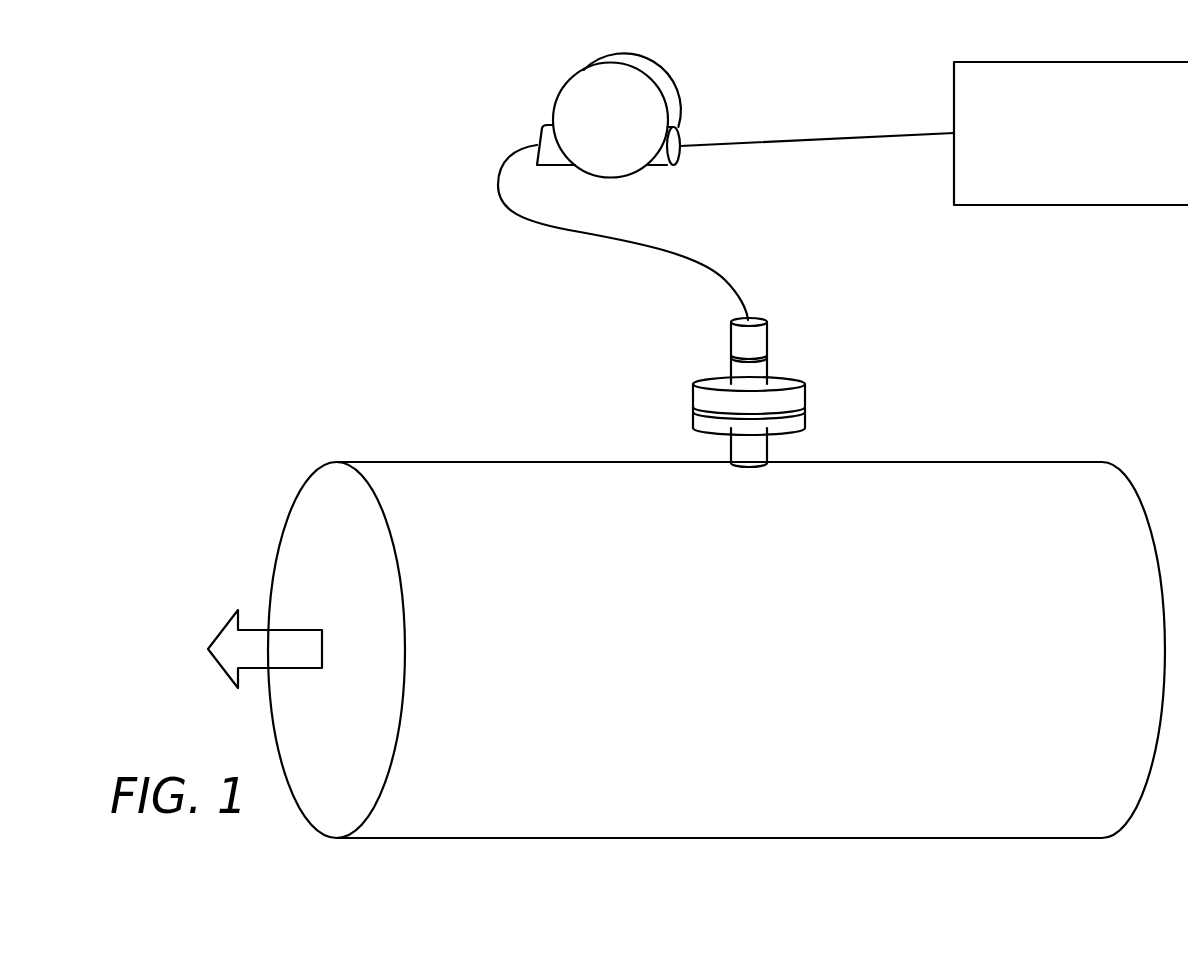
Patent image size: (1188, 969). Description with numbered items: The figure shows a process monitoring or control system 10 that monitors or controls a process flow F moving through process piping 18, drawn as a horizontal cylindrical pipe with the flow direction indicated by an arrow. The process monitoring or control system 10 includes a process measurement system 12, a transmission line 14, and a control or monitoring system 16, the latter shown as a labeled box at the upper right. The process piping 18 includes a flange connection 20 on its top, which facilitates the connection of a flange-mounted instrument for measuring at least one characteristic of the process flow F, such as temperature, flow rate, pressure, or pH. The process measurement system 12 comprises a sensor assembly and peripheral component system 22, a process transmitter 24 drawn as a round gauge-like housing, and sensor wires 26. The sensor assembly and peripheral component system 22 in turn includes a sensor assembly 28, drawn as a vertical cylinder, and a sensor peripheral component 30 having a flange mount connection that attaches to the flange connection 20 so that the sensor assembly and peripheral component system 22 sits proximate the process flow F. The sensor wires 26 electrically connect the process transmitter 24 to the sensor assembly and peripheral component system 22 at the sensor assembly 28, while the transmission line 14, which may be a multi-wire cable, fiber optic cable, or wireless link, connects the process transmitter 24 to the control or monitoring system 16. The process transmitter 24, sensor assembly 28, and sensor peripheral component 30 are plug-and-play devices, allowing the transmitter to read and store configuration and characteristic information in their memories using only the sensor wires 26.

The process monitoring or control system 10 is at (417, 235).
The process measurement system 12 is at (518, 122).
The transmission line 14 is at (777, 140).
The control or monitoring system 16 is at (1085, 205).
The process piping 18 is at (468, 462).
The flange connection 20 is at (805, 415).
The sensor assembly and peripheral component system 22 is at (777, 353).
The process transmitter 24 is at (628, 178).
The sensor wires 26 is at (643, 246).
The sensor assembly 28 is at (767, 328).
The sensor peripheral component 30 is at (806, 386).